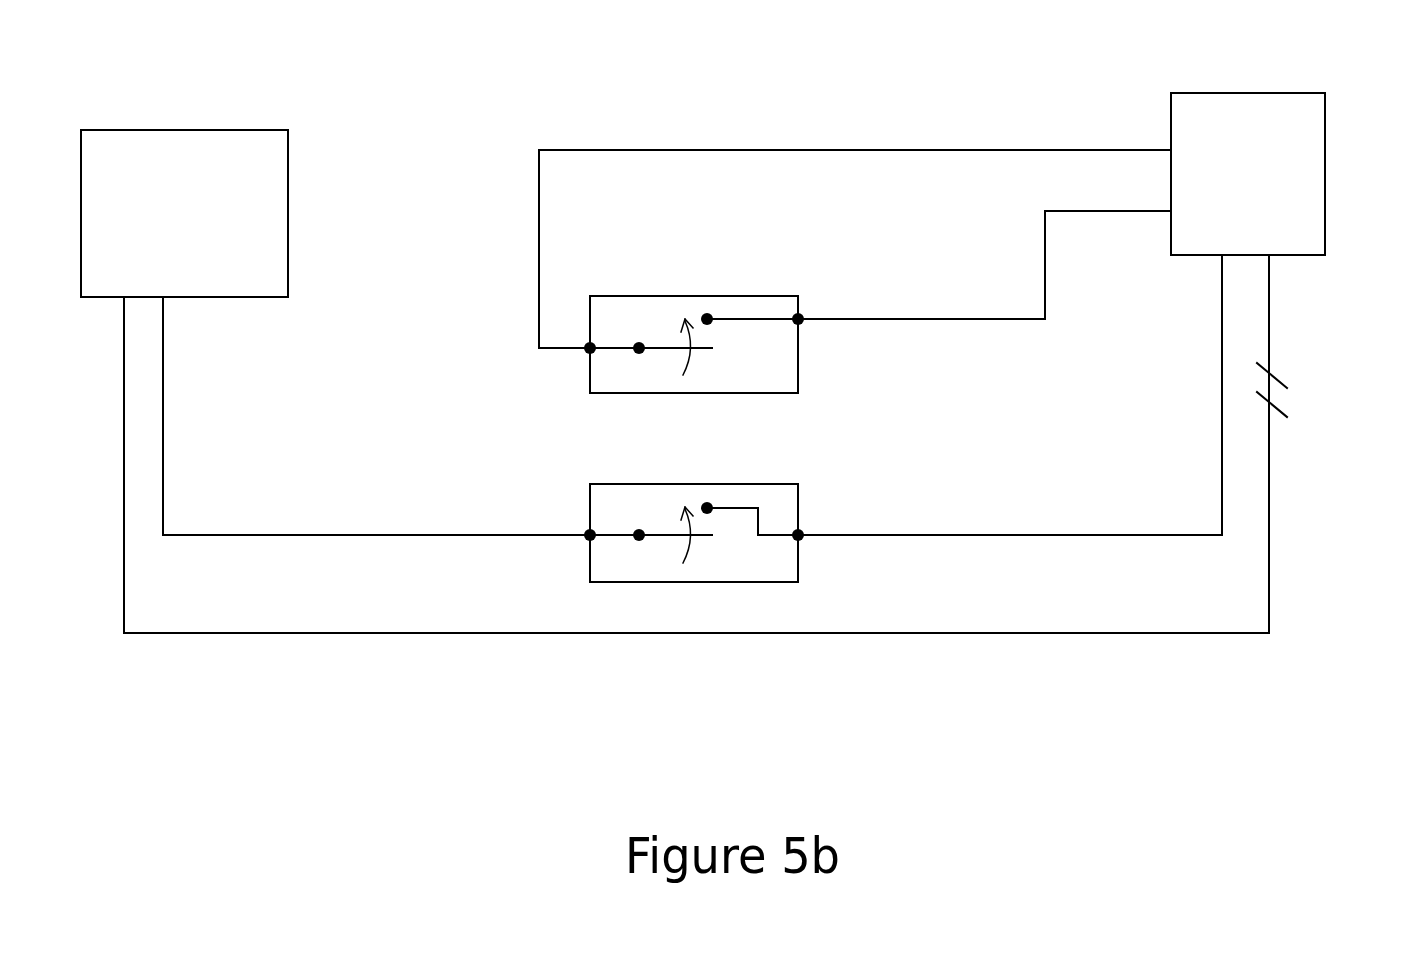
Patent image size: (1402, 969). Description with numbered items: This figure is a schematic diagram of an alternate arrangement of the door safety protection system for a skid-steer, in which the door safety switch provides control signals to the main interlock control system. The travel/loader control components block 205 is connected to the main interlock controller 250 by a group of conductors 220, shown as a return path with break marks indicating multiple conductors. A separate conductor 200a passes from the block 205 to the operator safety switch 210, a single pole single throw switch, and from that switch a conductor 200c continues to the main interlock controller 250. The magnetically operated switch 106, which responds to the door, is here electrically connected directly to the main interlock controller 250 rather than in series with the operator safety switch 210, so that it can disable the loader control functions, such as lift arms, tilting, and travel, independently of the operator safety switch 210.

The travel/loader control components block 205 is at (182, 130).
The main interlock controller 250 is at (1248, 93).
The magnetically operated switch 106 is at (798, 345).
The operator safety switch 210 is at (798, 509).
The conductor 200a is at (163, 423).
The conductor 200c is at (965, 535).
The group of conductors 220 is at (1269, 453).